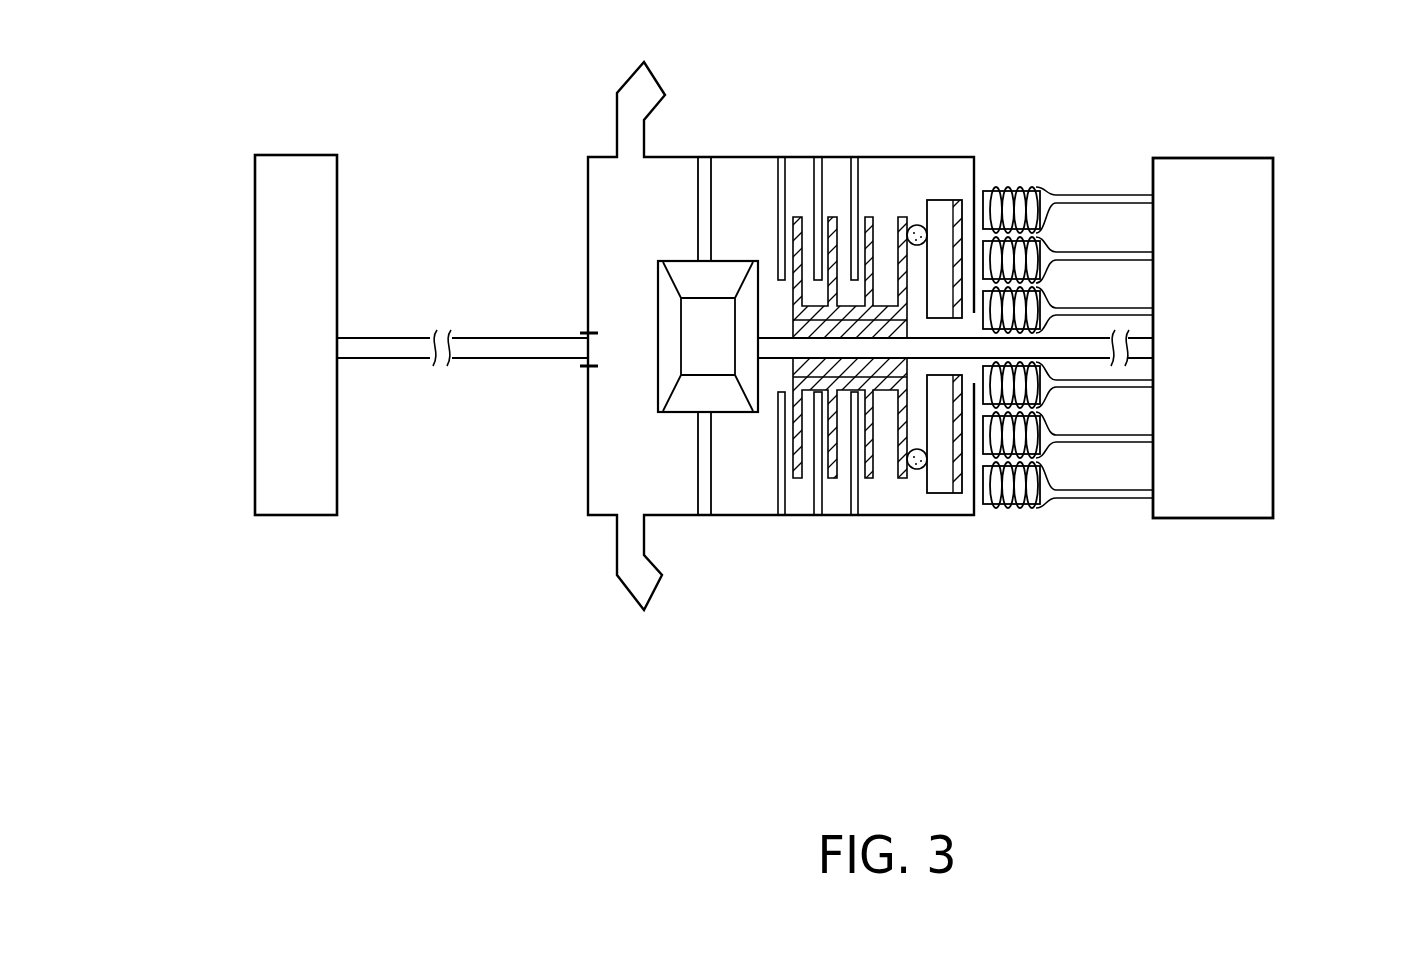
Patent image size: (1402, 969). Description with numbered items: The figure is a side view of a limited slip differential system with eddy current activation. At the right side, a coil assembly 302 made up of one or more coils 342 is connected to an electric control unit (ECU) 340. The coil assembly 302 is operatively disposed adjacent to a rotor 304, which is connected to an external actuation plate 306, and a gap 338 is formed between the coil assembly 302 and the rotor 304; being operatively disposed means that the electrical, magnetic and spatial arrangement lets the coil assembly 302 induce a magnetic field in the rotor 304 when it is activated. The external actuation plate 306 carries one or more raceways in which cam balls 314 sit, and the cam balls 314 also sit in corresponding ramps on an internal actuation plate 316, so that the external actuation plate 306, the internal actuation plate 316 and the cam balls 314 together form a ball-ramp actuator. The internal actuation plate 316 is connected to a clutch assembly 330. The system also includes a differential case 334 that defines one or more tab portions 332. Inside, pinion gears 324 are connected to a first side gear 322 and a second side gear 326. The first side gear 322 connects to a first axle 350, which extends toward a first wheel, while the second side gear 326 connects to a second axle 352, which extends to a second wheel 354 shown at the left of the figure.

The coil assembly 302 is at (862, 379).
The rotor 304 is at (957, 494).
The external actuation plate 306 is at (947, 193).
The cam balls 314 is at (917, 474).
The internal actuation plate 316 is at (903, 217).
The first side gear 322 is at (750, 318).
The pinion gears 324 is at (688, 275).
The second side gear 326 is at (662, 378).
The clutch assembly 330 is at (798, 217).
The tab portions 332 is at (848, 502).
The differential case 334 is at (605, 535).
The gap 338 is at (980, 195).
The electric control unit (ECU) 340 is at (1250, 327).
The coils 342 is at (1105, 508).
The first axle 350 is at (1093, 350).
The second axle 352 is at (375, 349).
The second wheel 354 is at (280, 432).